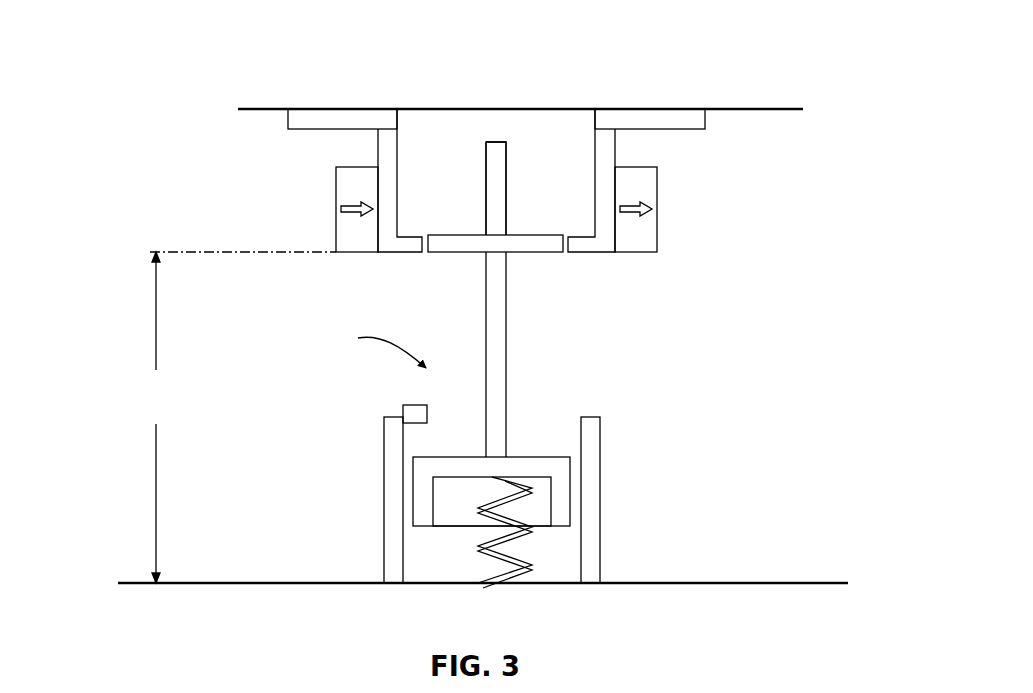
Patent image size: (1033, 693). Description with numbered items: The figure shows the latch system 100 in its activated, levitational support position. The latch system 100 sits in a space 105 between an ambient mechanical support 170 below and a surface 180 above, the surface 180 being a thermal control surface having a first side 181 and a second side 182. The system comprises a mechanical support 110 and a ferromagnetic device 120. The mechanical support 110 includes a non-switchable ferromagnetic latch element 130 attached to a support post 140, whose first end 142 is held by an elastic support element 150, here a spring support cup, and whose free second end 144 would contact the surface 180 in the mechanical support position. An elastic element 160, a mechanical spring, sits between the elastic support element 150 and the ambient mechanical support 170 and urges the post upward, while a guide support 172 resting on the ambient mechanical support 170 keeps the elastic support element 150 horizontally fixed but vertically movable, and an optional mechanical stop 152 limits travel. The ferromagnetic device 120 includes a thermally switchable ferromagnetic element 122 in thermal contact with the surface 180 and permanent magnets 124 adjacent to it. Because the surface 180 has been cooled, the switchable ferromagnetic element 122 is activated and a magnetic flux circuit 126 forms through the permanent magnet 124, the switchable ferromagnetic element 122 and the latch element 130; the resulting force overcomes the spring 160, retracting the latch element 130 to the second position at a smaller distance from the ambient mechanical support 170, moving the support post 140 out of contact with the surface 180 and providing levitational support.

The latch system 100 is at (158, 46).
The space 105 is at (778, 388).
The mechanical support 110 is at (330, 401).
The ferromagnetic device 120 is at (716, 187).
The thermally switchable ferromagnetic element 122 is at (617, 140).
The permanent magnet 124 is at (657, 208).
The magnetic flux circuit 126 is at (630, 304).
The latch element 130 is at (475, 254).
The support post 140 is at (508, 377).
The first end 142 is at (486, 456).
The second end 144 is at (486, 146).
The elastic support element 150 is at (524, 456).
The mechanical stop 152 is at (417, 405).
The elastic element 160 is at (480, 550).
The ambient mechanical support 170 is at (752, 585).
The guide support 172 is at (600, 507).
The surface 180 is at (437, 108).
The first side 181 is at (268, 113).
The second side 182 is at (272, 108).